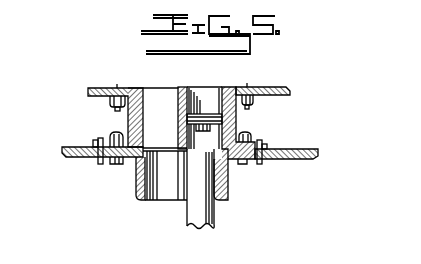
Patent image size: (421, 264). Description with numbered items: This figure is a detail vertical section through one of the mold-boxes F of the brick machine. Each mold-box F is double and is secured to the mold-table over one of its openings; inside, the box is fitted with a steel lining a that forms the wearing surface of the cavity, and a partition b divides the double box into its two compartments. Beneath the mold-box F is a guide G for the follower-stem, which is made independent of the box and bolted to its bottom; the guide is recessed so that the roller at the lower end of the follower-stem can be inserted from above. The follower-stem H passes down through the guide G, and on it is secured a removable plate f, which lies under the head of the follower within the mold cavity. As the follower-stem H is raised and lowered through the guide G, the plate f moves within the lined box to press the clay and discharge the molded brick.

The steel lining a is at (140, 88).
The partition b is at (183, 87).
The removable plate f is at (214, 95).
The mold-box F is at (123, 110).
The guide G is at (135, 180).
The follower-stem H is at (190, 183).